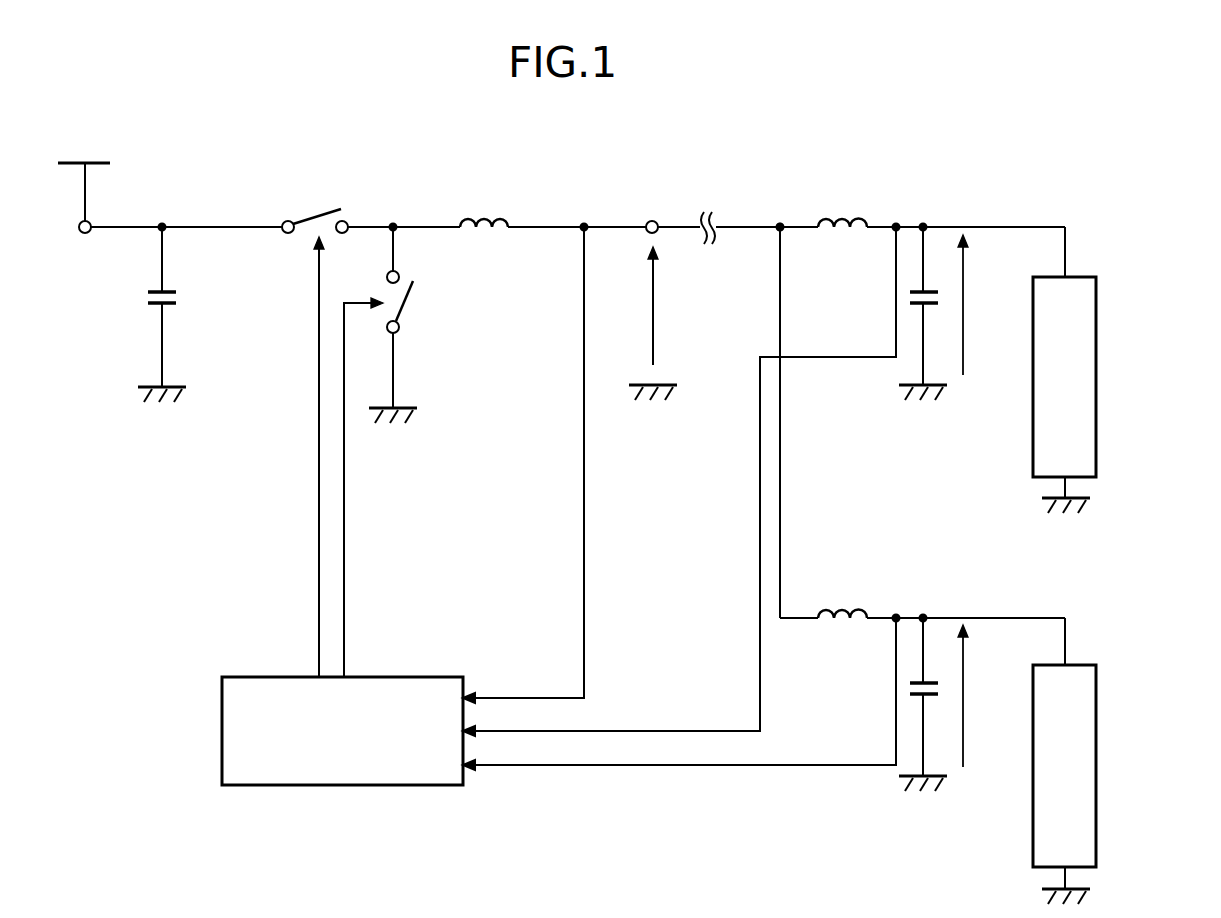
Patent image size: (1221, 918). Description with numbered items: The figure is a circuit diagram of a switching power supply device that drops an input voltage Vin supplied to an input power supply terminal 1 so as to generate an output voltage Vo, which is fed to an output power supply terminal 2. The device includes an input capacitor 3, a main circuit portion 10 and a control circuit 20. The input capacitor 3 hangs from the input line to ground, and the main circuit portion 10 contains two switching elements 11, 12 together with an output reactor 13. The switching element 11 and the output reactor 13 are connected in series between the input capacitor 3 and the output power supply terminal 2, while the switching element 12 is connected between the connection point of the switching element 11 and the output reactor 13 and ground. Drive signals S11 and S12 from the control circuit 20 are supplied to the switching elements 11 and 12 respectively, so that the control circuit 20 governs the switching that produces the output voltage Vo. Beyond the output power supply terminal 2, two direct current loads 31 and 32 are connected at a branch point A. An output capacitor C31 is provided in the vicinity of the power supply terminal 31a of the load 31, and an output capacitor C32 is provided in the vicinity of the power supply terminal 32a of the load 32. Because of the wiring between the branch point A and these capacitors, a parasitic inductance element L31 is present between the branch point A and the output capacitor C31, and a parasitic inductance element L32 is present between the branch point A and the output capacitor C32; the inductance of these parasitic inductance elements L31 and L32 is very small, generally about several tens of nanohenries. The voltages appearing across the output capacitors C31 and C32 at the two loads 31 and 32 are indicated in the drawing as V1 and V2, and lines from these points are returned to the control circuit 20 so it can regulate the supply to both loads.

The input power supply terminal 1 is at (81, 234).
The output power supply terminal 2 is at (654, 218).
The input capacitor 3 is at (144, 301).
The main circuit portion 10 is at (380, 182).
The switching element 11 is at (293, 220).
The switching element 12 is at (408, 298).
The output reactor 13 is at (483, 222).
The control circuit 20 is at (222, 729).
The direct current load 31 is at (1096, 360).
The power supply terminal of load 31 31a is at (1066, 276).
The direct current load 32 is at (1096, 750).
The power supply terminal of load 32 32a is at (1066, 666).
The branch point A is at (778, 224).
The parasitic inductance element L31 is at (838, 223).
The output capacitor C31 is at (908, 298).
The parasitic inductance element L32 is at (838, 614).
The output capacitor C32 is at (908, 689).
The drive signal S11 is at (319, 516).
The drive signal S12 is at (344, 528).
The input voltage Vin is at (84, 173).
The output voltage Vo is at (666, 323).
The load voltage V1 is at (982, 305).
The load voltage V2 is at (982, 696).